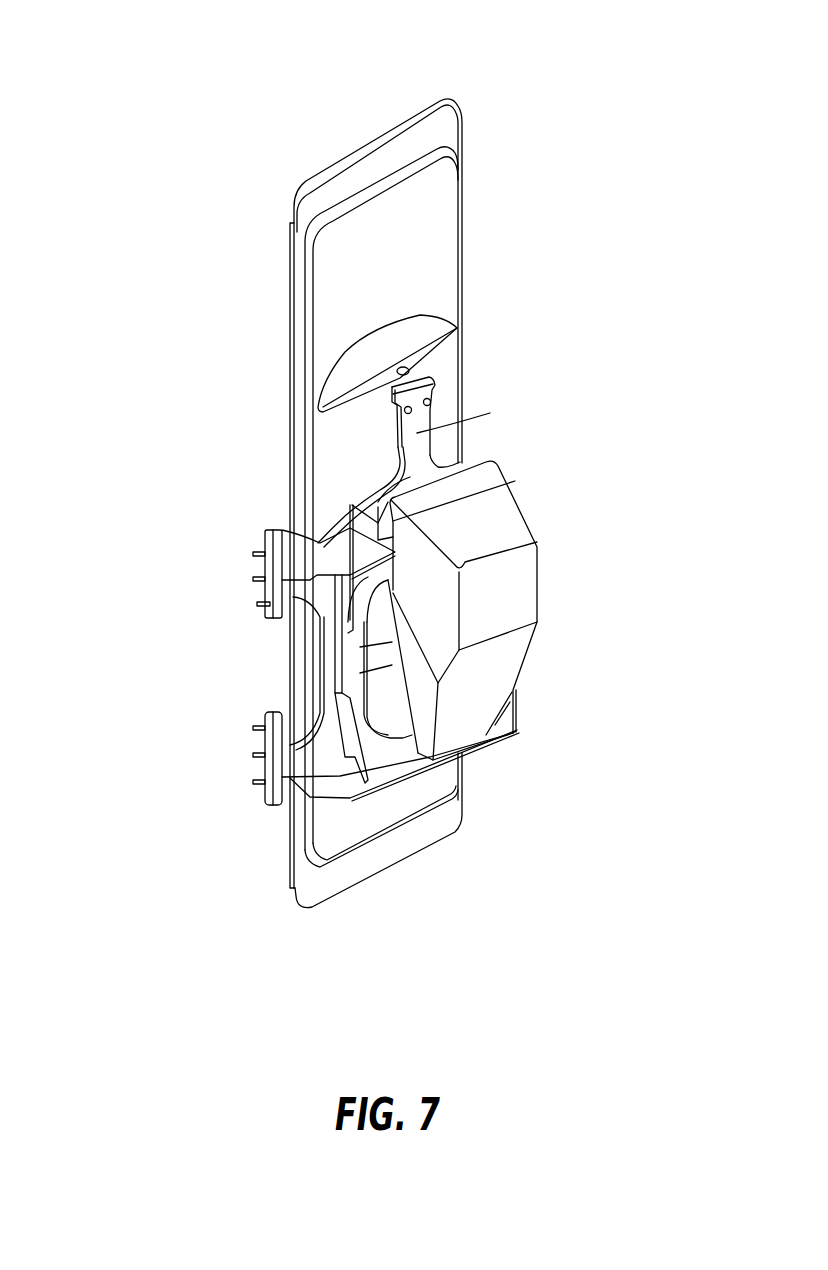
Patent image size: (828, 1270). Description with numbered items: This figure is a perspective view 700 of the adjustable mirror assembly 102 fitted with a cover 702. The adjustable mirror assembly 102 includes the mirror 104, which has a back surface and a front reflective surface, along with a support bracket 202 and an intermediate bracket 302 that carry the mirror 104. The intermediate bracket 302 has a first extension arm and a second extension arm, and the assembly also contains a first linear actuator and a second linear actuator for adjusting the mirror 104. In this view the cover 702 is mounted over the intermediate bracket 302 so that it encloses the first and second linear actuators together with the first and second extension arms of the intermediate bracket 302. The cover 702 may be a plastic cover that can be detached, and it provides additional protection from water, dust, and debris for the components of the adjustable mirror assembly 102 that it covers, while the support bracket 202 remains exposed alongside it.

The perspective view 700 is at (218, 69).
The mirror 104 is at (290, 302).
The intermediate bracket 302 is at (418, 433).
The cover 702 is at (513, 586).
The support bracket 202 is at (287, 550).
The adjustable mirror assembly 102 is at (517, 712).